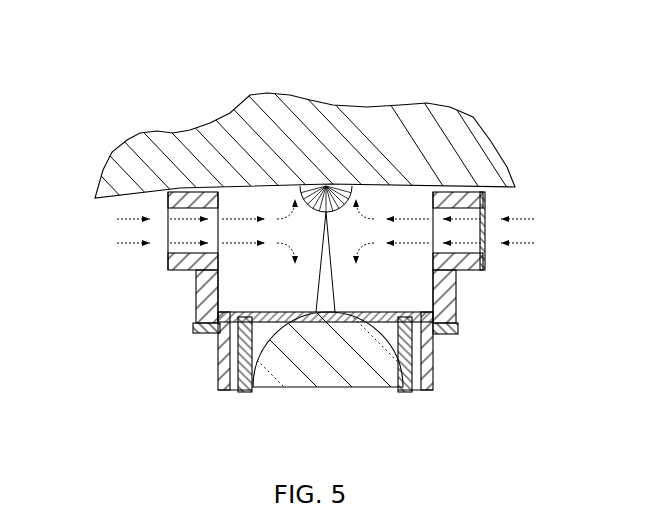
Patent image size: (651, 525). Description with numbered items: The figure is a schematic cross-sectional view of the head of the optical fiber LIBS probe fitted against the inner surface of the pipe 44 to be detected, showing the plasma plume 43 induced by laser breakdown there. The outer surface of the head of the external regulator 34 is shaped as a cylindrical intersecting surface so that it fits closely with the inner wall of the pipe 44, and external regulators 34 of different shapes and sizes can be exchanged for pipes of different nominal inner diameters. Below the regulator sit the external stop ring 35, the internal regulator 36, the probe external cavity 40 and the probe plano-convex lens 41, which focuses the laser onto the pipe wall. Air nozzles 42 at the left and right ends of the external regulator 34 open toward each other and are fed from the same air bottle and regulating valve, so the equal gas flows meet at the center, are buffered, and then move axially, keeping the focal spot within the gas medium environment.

The external regulator 34 is at (168, 270).
The external stop ring 35 is at (193, 325).
The internal regulator 36 is at (248, 390).
The probe external cavity 40 is at (218, 390).
The probe plano-convex lens 41 is at (350, 388).
The air nozzles 42 is at (485, 263).
The plasma plume 43 is at (326, 186).
The pipe to be detected 44 is at (220, 118).